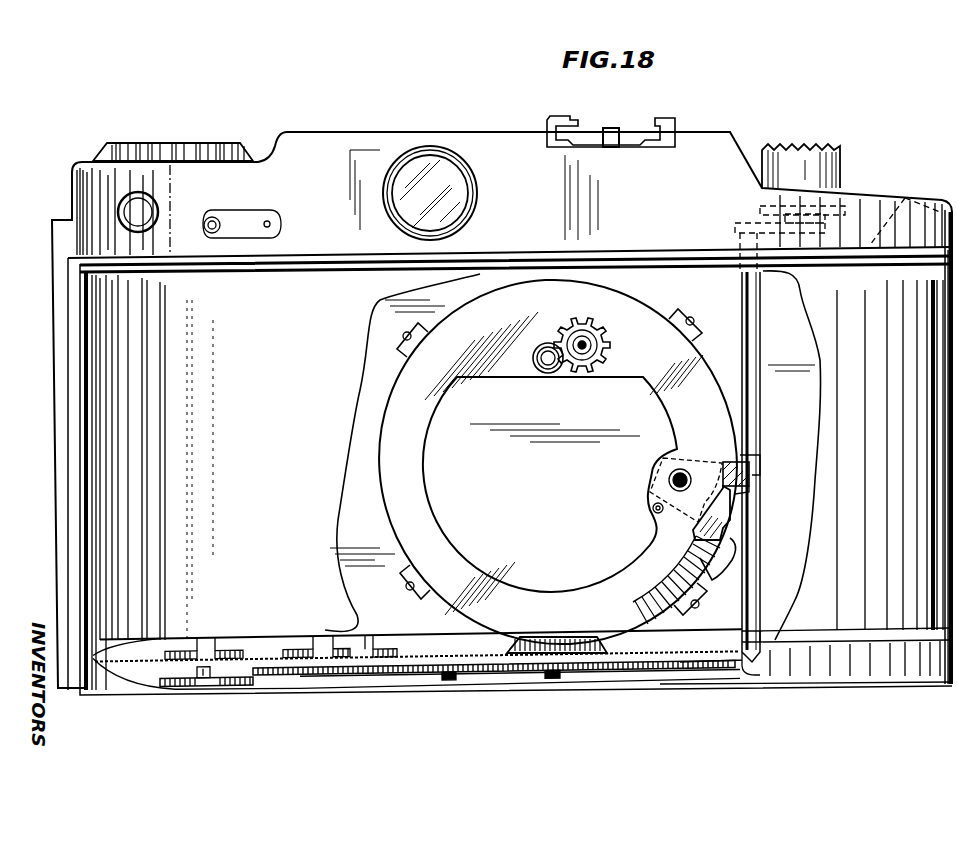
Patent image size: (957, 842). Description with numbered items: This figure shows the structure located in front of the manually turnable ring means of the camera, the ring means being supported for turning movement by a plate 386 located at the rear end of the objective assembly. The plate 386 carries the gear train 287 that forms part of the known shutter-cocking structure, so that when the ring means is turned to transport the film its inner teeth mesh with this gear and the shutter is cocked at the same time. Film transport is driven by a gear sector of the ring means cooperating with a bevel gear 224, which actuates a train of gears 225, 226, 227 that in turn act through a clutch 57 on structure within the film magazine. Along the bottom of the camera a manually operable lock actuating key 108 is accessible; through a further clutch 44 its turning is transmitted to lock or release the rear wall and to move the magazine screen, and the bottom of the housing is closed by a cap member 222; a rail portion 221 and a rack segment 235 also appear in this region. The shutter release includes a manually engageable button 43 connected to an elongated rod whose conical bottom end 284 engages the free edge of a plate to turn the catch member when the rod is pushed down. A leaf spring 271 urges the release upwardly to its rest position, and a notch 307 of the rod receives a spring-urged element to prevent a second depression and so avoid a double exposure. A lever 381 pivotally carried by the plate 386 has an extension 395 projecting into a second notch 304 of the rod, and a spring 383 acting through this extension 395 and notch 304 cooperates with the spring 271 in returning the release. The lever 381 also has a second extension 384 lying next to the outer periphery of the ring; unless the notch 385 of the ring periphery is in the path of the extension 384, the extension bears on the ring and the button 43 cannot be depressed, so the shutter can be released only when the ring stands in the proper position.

The manually engageable button 43 is at (840, 161).
The spring 271 is at (895, 215).
The gear 287 is at (582, 374).
The plate 386 is at (392, 420).
The second notch 304 is at (748, 460).
The spring 383 is at (656, 494).
The extension 395 is at (750, 474).
The lever 381 is at (755, 490).
The notch 385 is at (655, 556).
The second extension 384 is at (712, 568).
The notch 307 is at (770, 624).
The clutch 44 is at (176, 650).
The rack segment 235 is at (322, 642).
The clutch 57 is at (364, 650).
The bevel gear 224 is at (545, 637).
The lock actuating member 108 is at (190, 688).
The gear 225 is at (278, 670).
The gear 226 is at (445, 678).
The gear 227 is at (545, 680).
The guide rail 221 is at (645, 662).
The bottom end 284 is at (740, 662).
The cap member 222 is at (845, 672).